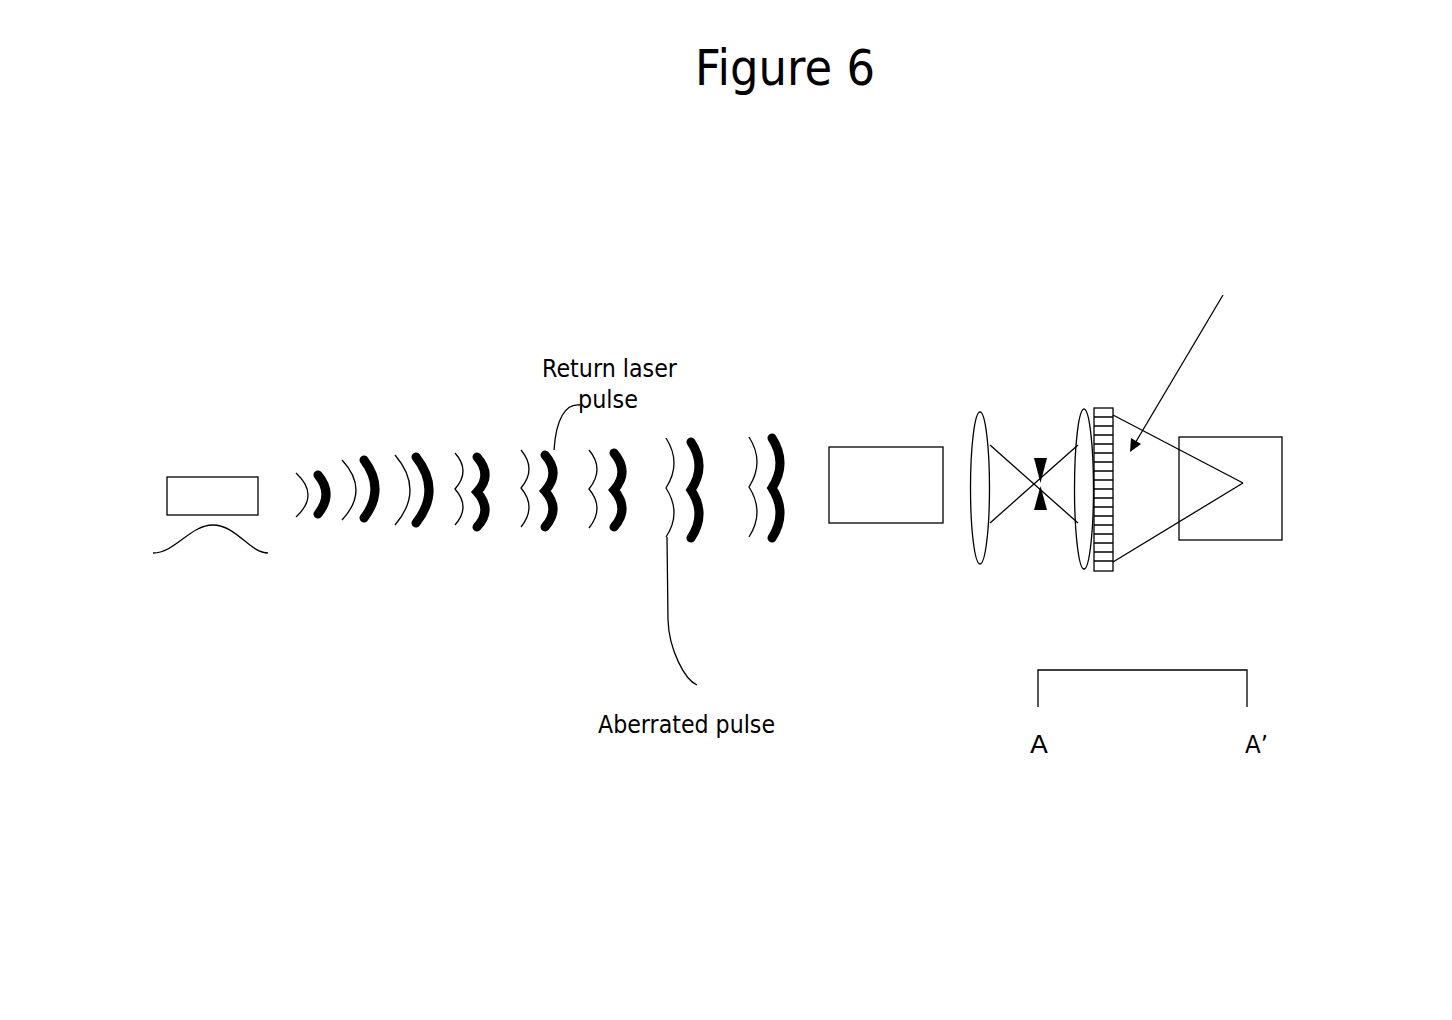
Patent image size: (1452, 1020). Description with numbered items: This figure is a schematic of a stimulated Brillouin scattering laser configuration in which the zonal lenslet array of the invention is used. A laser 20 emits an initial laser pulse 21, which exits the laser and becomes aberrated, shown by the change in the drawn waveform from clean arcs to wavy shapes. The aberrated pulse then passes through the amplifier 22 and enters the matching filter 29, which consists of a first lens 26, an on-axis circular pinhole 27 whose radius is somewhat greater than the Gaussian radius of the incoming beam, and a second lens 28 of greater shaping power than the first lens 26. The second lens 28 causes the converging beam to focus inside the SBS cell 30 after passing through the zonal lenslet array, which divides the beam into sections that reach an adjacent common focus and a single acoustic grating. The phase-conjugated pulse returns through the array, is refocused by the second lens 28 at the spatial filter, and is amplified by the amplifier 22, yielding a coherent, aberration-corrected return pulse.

The laser 20 is at (220, 480).
The laser pulse 21 is at (298, 512).
The amplifier 22 is at (925, 447).
The first lens 26 is at (973, 545).
The pinhole 27 is at (1035, 453).
The second lens 28 is at (1078, 423).
The matching filter 29 is at (1130, 552).
The SBS cell 30 is at (1295, 453).